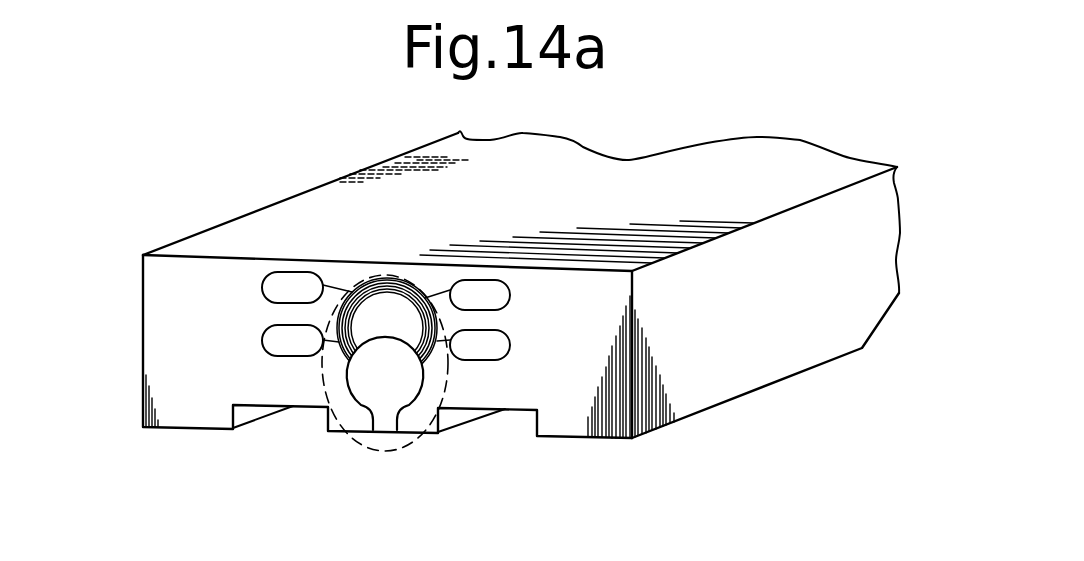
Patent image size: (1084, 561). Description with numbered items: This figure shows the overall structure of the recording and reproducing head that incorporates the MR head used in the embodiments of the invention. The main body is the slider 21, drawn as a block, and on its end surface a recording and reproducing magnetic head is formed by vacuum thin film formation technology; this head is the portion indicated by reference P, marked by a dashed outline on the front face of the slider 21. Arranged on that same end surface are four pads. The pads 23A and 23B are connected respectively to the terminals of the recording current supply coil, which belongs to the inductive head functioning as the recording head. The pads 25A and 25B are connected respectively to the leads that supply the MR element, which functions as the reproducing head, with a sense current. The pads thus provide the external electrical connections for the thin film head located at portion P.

The slider 21 is at (315, 210).
The pad 23A is at (279, 284).
The pad 23B is at (498, 297).
The pad 25A is at (278, 338).
The pad 25B is at (498, 347).
The recording and reproducing magnetic head portion P is at (408, 444).